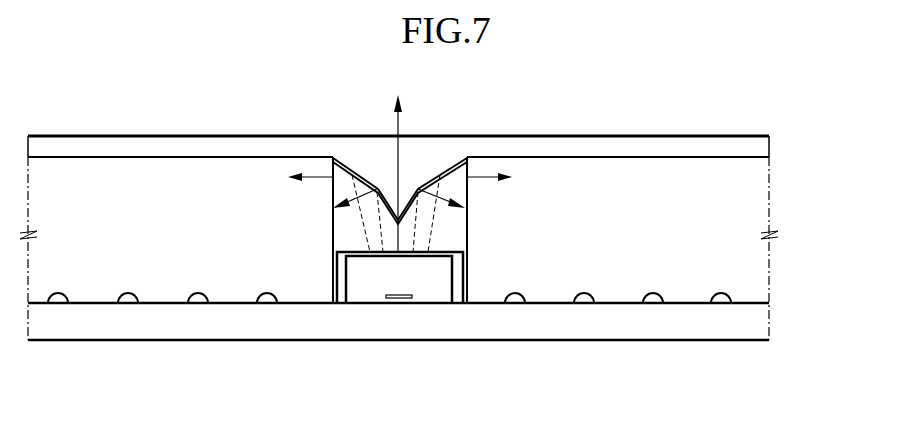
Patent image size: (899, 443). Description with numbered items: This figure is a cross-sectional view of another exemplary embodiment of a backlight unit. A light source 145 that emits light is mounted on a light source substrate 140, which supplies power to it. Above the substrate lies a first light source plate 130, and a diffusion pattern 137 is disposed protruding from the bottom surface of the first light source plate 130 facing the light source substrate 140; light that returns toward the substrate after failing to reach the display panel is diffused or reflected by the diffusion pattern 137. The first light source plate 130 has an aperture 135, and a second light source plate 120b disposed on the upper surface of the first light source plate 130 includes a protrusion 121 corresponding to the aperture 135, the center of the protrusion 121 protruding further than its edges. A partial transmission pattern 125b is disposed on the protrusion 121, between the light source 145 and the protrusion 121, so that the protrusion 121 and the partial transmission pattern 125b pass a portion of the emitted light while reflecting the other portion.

The second light source plate 120b is at (759, 149).
The first light source plate 130 is at (769, 198).
The diffusion pattern 137 is at (723, 297).
The light source substrate 140 is at (759, 320).
The aperture 135 is at (467, 240).
The light source 145 is at (428, 300).
The partial transmission pattern 125b is at (347, 165).
The protrusion 121 is at (427, 178).